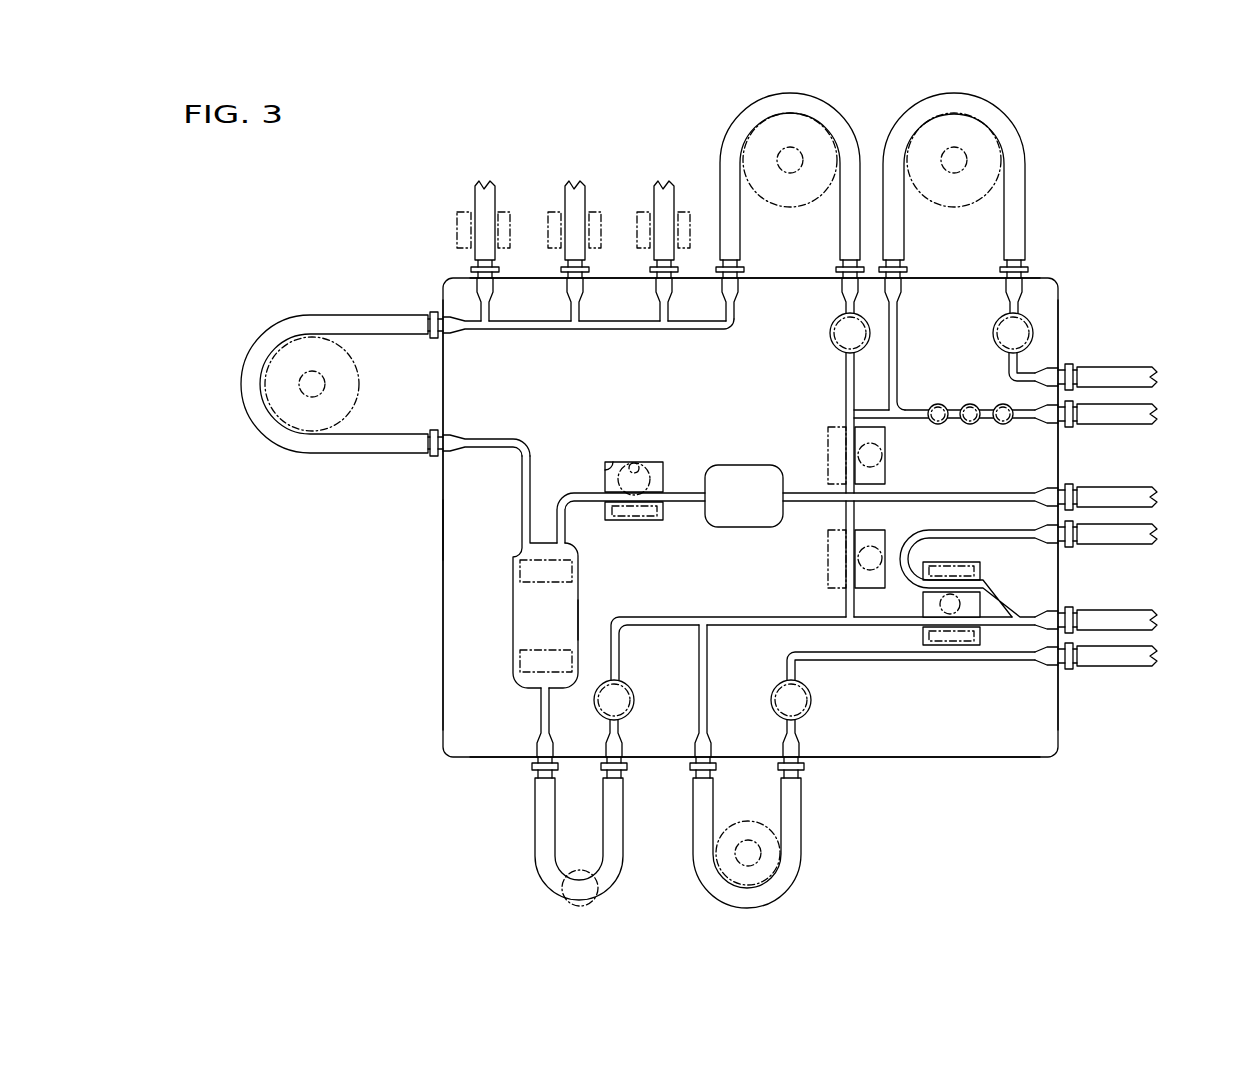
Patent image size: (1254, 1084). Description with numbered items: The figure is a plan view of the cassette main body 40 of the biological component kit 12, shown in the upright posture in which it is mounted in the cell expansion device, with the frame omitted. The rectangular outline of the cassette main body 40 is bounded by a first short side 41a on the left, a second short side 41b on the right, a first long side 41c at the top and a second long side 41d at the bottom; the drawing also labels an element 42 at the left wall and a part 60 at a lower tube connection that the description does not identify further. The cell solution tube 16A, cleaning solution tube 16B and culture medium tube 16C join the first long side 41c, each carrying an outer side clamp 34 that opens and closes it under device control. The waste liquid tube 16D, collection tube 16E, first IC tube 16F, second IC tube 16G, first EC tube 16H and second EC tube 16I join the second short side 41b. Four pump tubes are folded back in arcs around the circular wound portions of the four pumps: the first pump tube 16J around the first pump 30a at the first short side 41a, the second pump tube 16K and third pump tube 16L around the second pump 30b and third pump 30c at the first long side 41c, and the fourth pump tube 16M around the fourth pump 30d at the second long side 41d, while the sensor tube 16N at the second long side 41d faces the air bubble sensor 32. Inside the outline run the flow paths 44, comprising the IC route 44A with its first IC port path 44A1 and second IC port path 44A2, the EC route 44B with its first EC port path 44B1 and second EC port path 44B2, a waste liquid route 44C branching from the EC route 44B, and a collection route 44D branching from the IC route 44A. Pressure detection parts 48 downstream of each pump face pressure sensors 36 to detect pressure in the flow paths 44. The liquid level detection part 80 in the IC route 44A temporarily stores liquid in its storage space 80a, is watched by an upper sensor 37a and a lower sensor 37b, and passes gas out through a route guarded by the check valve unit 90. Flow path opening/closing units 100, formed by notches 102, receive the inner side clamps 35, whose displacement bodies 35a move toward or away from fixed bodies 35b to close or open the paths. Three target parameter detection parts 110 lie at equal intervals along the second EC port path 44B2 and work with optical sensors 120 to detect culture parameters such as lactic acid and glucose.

The biological component kit 12 is at (266, 220).
The cassette main body 40 is at (413, 265).
The flow paths 44 is at (437, 300).
The side wall 42 is at (443, 522).
The first short side 41a is at (441, 742).
The second short side 41b is at (1060, 728).
The first long side 41c is at (1042, 276).
The second long side 41d is at (1022, 758).
The cell solution tube 16A is at (483, 180).
The cleaning solution tube 16B is at (575, 180).
The culture medium tube 16C is at (664, 180).
The waste liquid tube 16D is at (1160, 497).
The collection tube 16E is at (1160, 534).
The first IC tube 16F is at (1160, 656).
The second IC tube 16G is at (1160, 620).
The first EC tube 16H is at (1160, 377).
The second EC tube 16I is at (1160, 414).
The first pump tube 16J is at (250, 371).
The second pump tube 16K is at (836, 113).
The third pump tube 16L is at (1007, 117).
The fourth pump tube 16M is at (791, 853).
The sensor tube 16N is at (545, 870).
The outer side clamps 34 is at (456, 214).
The first pump 30a is at (337, 424).
The second pump 30b is at (774, 203).
The third pump 30c is at (937, 203).
The fourth pump 30d is at (756, 824).
The pressure sensors 36 is at (847, 333).
The pressure detection parts 48 is at (838, 320).
The air bubble sensor 32 is at (580, 868).
The joint 60 is at (530, 773).
The liquid level detection part 80 is at (509, 547).
The storage space 80a is at (525, 619).
The upper sensor 37a is at (523, 573).
The lower sensor 37b is at (523, 661).
The inner side clamps 35 is at (637, 524).
The displacement bodies 35a is at (661, 480).
The fixed bodies 35b is at (619, 516).
The check valve unit 90 is at (705, 524).
The flow path opening/closing units 100 is at (635, 459).
The notches 102 is at (611, 462).
The target parameter detection parts 110 is at (940, 423).
The optical sensors 120 is at (970, 378).
The IC route 44A is at (1154, 681).
The first IC port path 44A1 is at (992, 662).
The second IC port path 44A2 is at (1005, 627).
The EC route 44B is at (1156, 351).
The first EC port path 44B1 is at (1020, 368).
The second EC port path 44B2 is at (912, 409).
The waste liquid route 44C is at (1032, 492).
The collection route 44D is at (993, 539).